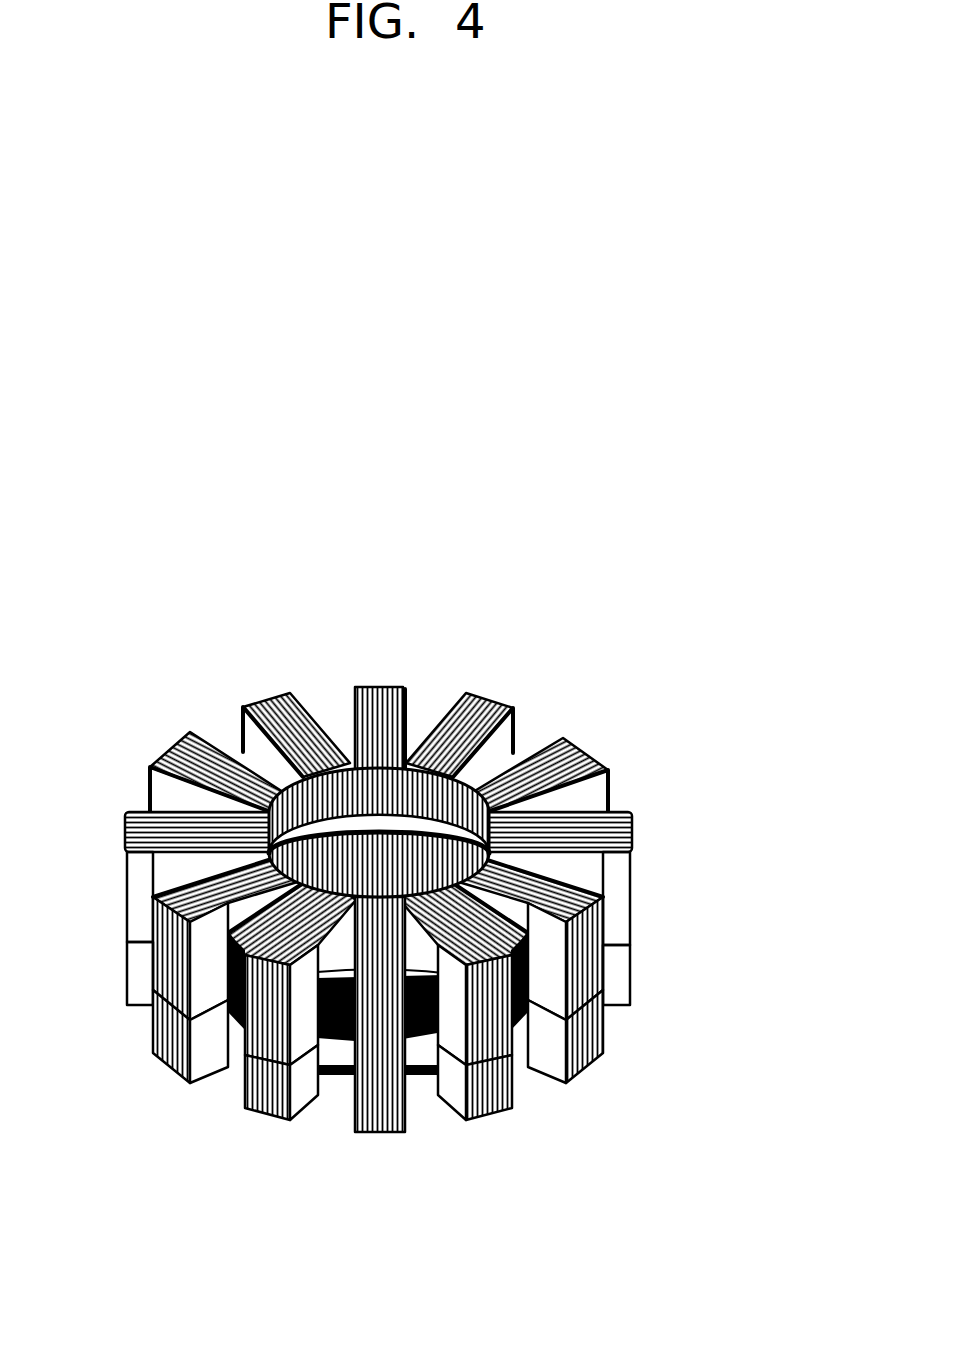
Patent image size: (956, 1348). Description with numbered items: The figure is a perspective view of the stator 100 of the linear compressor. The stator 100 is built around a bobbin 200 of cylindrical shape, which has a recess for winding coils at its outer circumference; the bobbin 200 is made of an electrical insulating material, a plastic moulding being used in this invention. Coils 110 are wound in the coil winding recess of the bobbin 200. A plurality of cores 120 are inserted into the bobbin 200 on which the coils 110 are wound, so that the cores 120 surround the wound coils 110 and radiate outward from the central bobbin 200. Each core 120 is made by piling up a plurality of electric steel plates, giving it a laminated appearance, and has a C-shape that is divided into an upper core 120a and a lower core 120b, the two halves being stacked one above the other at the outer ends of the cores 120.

The stator 100 is at (133, 762).
The coils 110 is at (412, 1060).
The cores 120 is at (789, 990).
The upper core 120a is at (555, 958).
The lower core 120b is at (558, 1050).
The bobbin 200 is at (342, 1050).